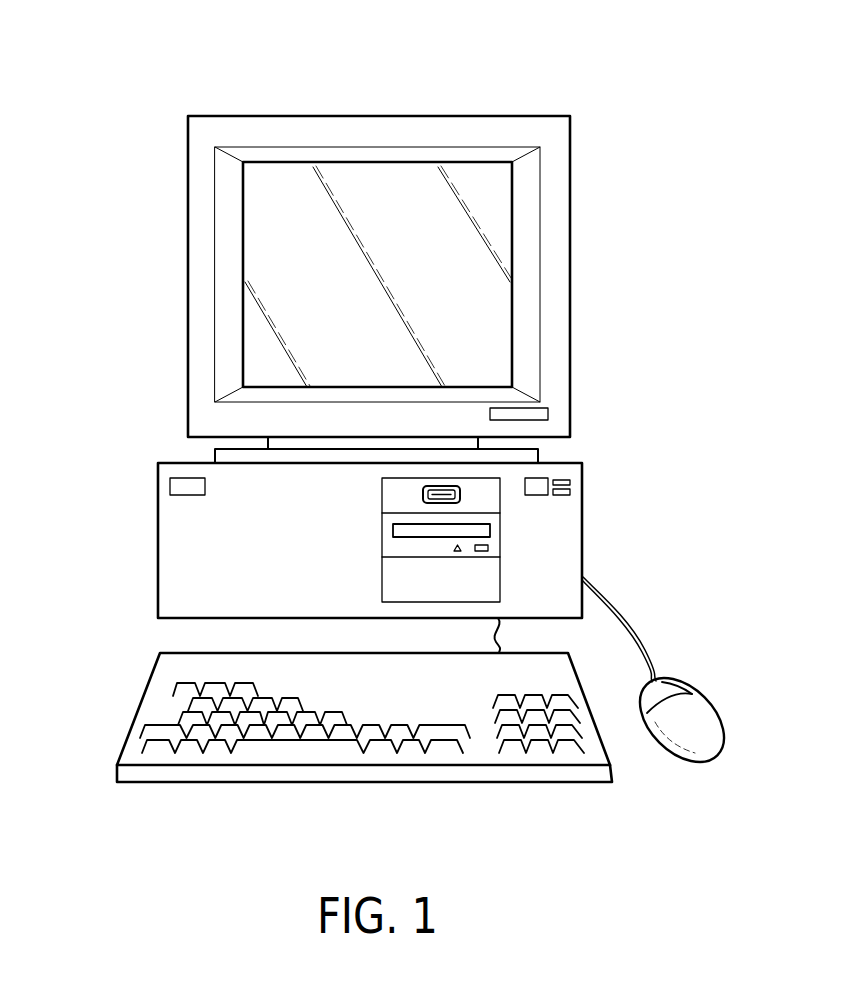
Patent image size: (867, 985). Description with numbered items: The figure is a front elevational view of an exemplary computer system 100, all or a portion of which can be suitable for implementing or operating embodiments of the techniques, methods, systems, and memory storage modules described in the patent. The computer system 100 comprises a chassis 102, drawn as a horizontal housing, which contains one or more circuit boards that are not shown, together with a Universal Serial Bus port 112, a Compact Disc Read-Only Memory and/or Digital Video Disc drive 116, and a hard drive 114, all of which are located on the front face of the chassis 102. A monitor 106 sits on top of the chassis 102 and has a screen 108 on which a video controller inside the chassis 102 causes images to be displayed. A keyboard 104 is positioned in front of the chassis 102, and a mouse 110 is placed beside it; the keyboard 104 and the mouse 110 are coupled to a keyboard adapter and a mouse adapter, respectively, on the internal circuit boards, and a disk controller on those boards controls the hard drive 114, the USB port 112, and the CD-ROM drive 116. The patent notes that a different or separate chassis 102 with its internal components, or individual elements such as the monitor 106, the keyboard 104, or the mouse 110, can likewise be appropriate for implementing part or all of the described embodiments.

The computer system 100 is at (562, 93).
The chassis 102 is at (158, 541).
The keyboard 104 is at (142, 702).
The monitor 106 is at (263, 116).
The screen 108 is at (292, 280).
The mouse 110 is at (700, 710).
The Universal Serial Bus (USB) port 112 is at (462, 492).
The hard drive 114 is at (490, 577).
The Compact Disc Read-Only Memory (CD-ROM) and/or Digital Video Disc (DVD) drive 116 is at (490, 537).